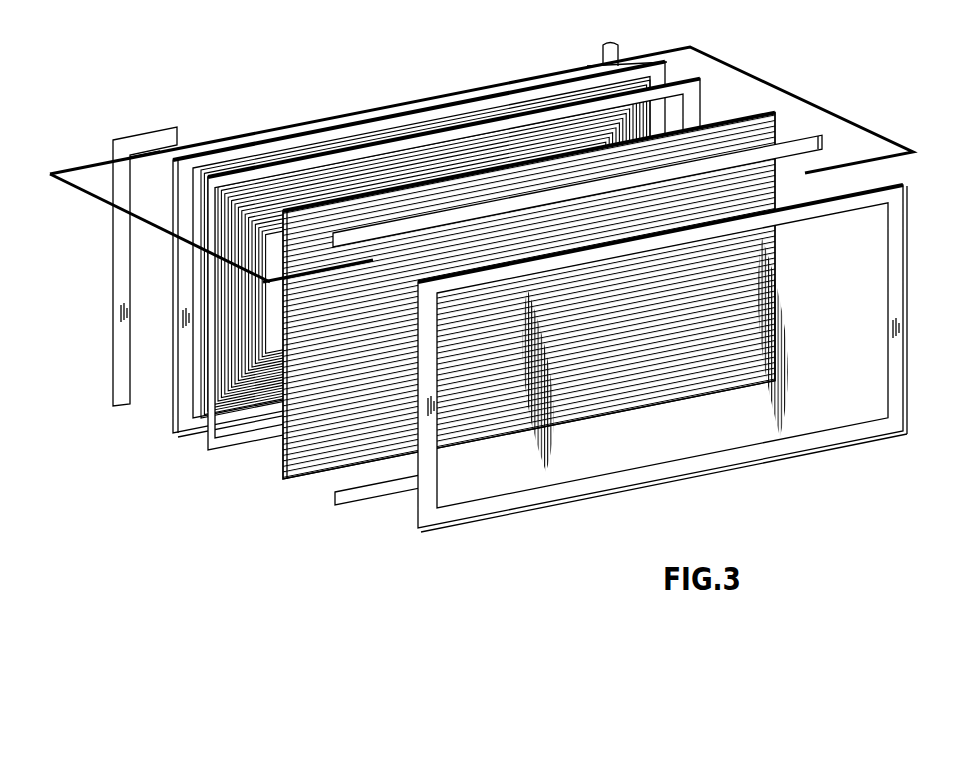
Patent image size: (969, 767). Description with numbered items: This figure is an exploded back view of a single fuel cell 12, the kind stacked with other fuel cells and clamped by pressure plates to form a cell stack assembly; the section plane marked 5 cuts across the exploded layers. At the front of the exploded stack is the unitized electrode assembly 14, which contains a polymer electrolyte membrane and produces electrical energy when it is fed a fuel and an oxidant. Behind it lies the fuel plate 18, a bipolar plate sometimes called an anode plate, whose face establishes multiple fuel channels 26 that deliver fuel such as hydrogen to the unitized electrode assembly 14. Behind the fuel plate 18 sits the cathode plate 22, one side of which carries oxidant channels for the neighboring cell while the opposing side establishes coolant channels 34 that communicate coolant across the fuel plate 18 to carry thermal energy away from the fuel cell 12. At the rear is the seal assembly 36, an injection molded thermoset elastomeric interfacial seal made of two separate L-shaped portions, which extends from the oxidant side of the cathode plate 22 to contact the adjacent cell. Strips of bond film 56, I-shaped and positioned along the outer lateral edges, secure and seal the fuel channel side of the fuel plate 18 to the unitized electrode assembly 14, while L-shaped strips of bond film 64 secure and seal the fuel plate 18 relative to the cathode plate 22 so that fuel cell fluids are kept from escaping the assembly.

The fuel cell 12 is at (481, 291).
The unitized electrode assembly 14 is at (418, 512).
The fuel plate 18 is at (503, 319).
The cathode plate 22 is at (176, 424).
The fuel channels 26 is at (330, 414).
The coolant channels 34 is at (236, 398).
The seal assembly 36 is at (113, 367).
The bond film 56 is at (357, 496).
The bond film 64 is at (212, 448).
The section line 5- 5 is at (150, 228).